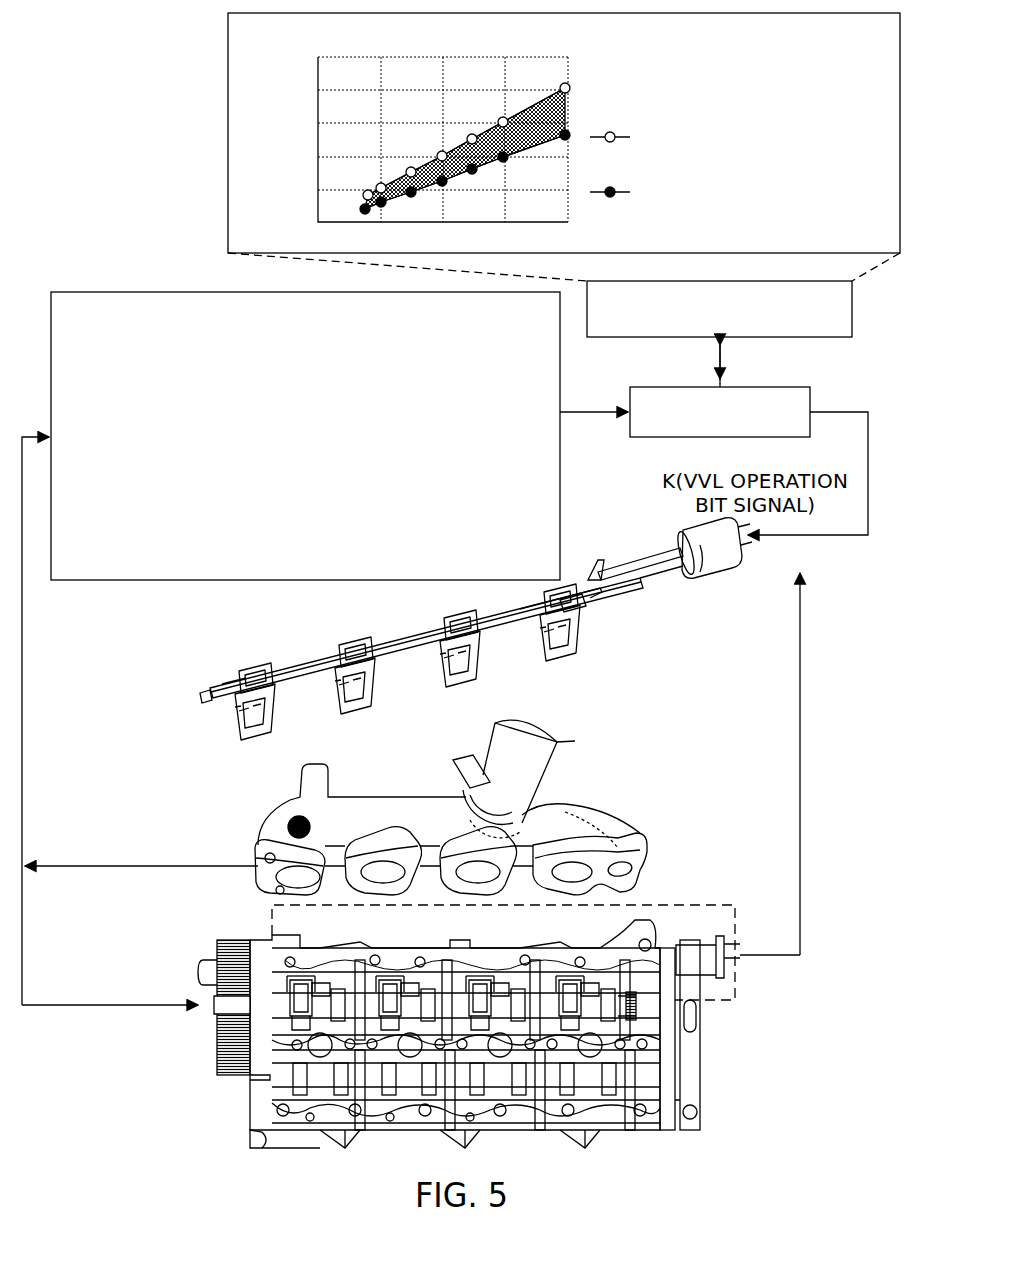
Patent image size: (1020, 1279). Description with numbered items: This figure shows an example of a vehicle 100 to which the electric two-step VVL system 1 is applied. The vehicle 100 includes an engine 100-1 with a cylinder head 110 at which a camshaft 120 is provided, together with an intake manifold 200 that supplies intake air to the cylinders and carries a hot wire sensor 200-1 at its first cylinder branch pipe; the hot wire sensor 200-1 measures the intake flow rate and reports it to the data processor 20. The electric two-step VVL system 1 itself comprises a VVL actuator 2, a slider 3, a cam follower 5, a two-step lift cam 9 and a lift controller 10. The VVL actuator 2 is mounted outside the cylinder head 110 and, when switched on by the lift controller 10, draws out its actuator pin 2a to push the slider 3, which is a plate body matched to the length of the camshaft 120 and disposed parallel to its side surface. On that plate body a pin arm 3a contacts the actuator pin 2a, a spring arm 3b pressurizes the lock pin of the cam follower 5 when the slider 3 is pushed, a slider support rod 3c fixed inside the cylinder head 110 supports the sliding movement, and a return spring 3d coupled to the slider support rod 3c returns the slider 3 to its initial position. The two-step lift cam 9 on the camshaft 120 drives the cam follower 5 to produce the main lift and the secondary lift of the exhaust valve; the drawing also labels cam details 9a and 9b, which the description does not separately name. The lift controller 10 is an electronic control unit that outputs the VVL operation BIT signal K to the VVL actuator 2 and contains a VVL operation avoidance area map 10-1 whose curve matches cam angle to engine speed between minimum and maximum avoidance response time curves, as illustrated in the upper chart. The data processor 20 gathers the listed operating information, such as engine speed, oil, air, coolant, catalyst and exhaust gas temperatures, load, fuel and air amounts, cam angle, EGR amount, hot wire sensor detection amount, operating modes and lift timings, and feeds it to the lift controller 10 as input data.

The electric two-step VVL system 1 is at (158, 216).
The VVL actuator 2 is at (705, 563).
The actuator pin 2a is at (670, 570).
The slider 3 is at (496, 634).
The pin arm 3a is at (592, 570).
The spring arm 3b is at (588, 618).
The slider support rod 3c is at (203, 697).
The return spring 3d is at (238, 686).
The cam follower 5 is at (270, 722).
The two-step lift cam 9 is at (555, 1022).
The cam lobe spring 9a is at (633, 1008).
The cam sleeve 9b is at (622, 1022).
The lift controller 10 is at (812, 400).
The VVL operation avoidance area map 10-1 is at (650, 340).
The data processor 20 is at (92, 582).
The vehicle 100 is at (712, 1112).
The engine 100-1 is at (262, 1148).
The cylinder head 110 is at (260, 1108).
The camshaft 120 is at (240, 1012).
The intake manifold 200 is at (420, 797).
The hot wire sensor 200-1 is at (288, 826).